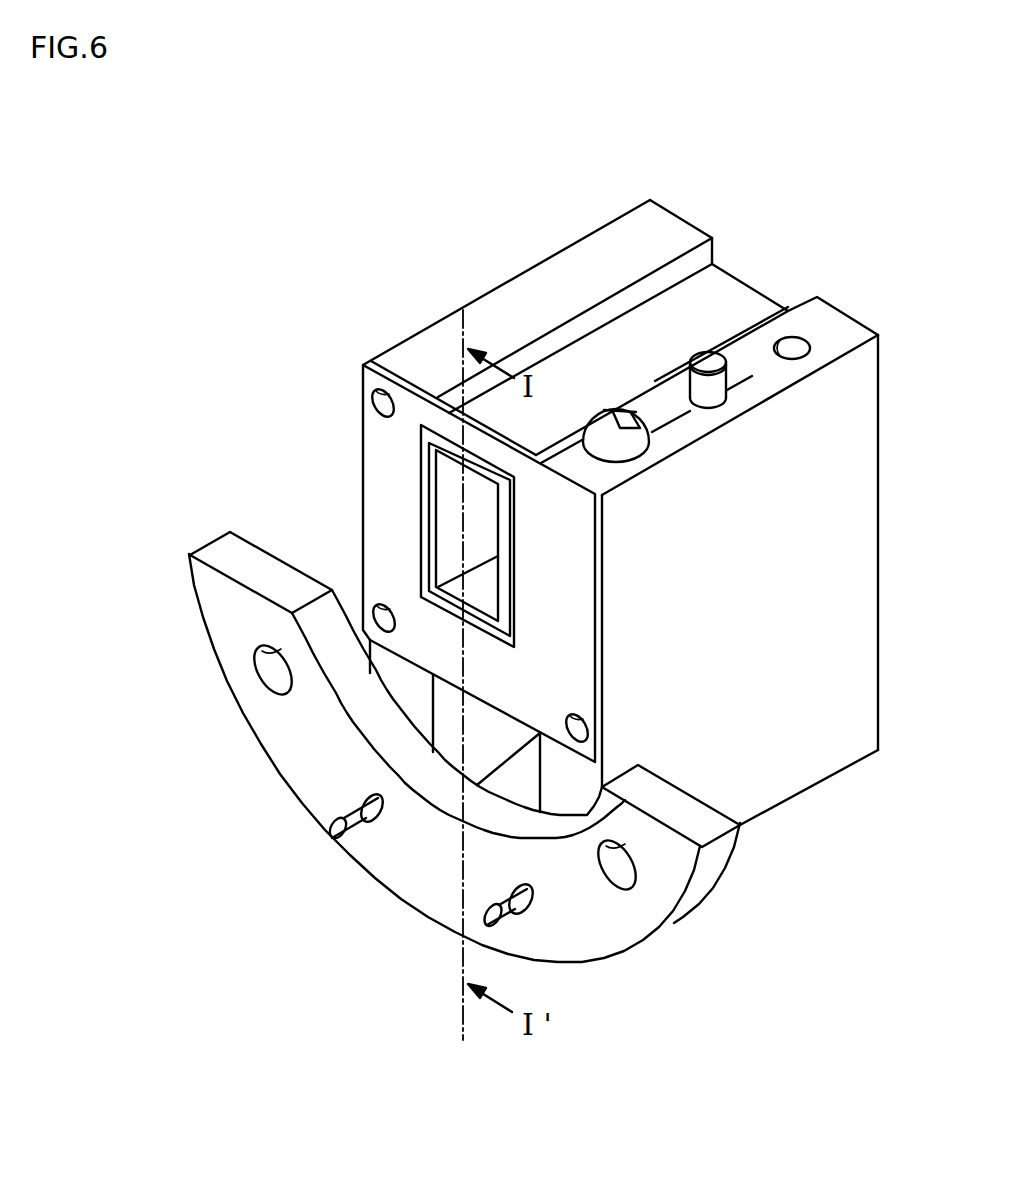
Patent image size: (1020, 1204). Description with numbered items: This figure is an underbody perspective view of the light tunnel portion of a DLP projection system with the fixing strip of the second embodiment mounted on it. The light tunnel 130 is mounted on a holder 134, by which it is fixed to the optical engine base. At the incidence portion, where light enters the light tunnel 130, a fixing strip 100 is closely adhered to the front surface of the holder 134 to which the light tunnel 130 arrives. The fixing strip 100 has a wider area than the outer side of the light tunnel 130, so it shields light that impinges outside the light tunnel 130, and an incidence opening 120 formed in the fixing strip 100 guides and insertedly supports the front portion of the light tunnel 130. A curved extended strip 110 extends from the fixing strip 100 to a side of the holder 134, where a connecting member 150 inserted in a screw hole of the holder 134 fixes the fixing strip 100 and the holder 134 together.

The fixing strip 100 is at (553, 612).
The curved extended strip 110 is at (590, 474).
The incidence opening 120 is at (430, 524).
The light tunnel 130 is at (720, 290).
The holder 134 is at (557, 283).
The connecting member 150 is at (693, 422).